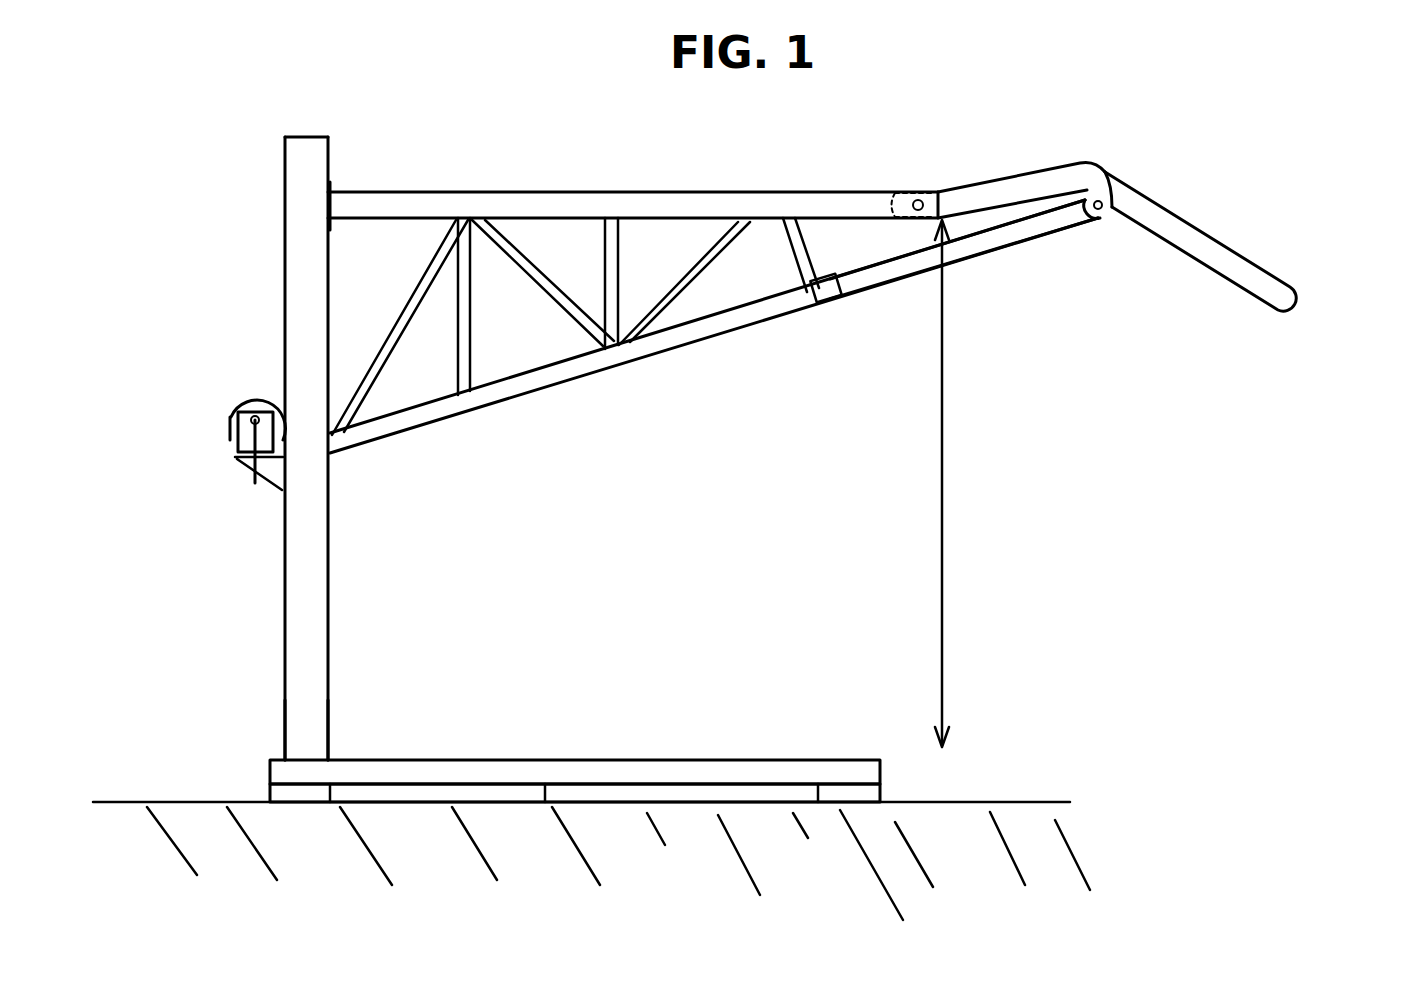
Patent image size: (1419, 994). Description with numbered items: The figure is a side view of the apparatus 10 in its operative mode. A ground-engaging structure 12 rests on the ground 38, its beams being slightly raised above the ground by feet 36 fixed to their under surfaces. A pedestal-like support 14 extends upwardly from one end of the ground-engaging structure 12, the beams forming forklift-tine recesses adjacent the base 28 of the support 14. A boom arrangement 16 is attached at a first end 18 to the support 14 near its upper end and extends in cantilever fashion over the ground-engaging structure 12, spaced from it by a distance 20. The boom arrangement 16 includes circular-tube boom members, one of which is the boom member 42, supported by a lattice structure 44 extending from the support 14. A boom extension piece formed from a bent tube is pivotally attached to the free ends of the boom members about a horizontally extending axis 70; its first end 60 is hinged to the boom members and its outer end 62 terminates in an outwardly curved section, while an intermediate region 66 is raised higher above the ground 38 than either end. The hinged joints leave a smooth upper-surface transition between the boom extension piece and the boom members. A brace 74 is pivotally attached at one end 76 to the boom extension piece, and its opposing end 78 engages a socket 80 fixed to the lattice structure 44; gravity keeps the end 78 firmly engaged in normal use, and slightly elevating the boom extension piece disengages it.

The apparatus 10 is at (1188, 148).
The ground-engaging structure 12 is at (752, 770).
The pedestal-like support 14 is at (312, 640).
The boom arrangement 16 is at (645, 180).
The first end 18 is at (337, 164).
The distance 20 is at (943, 520).
The base 28 is at (268, 748).
The feet 36 is at (882, 793).
The ground 38 is at (1078, 835).
The boom member 42 is at (758, 205).
The lattice structure 44 is at (585, 330).
The first end 60 is at (948, 180).
The outer end 62 is at (1300, 302).
The intermediate region 66 is at (1095, 160).
The horizontally extending axis 70 is at (918, 198).
The brace 74 is at (1020, 230).
The end 76 is at (1112, 215).
The opposing end 78 is at (850, 298).
The socket 80 is at (815, 300).